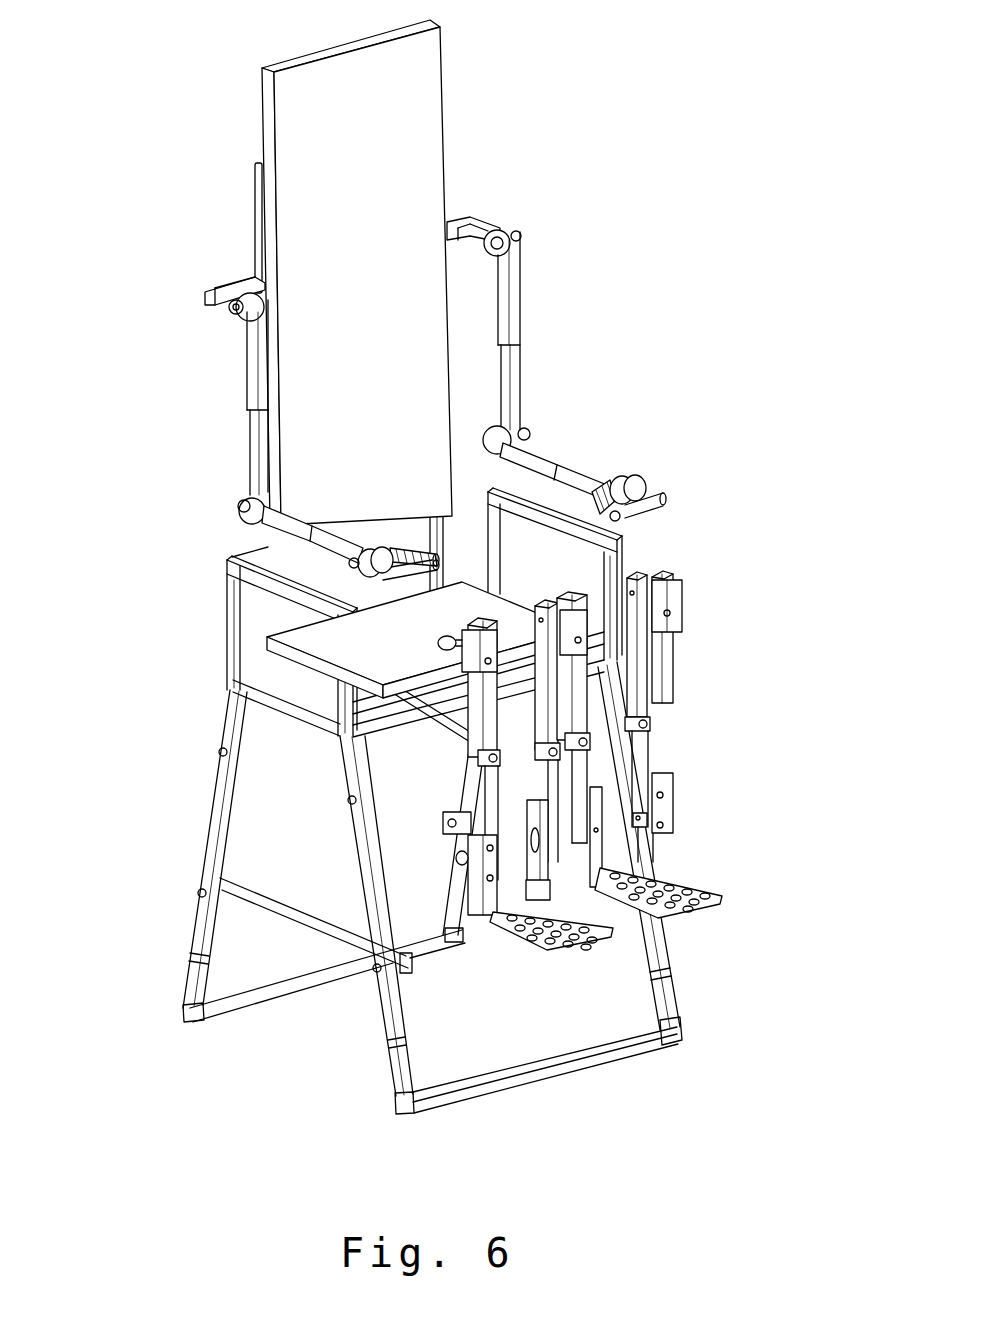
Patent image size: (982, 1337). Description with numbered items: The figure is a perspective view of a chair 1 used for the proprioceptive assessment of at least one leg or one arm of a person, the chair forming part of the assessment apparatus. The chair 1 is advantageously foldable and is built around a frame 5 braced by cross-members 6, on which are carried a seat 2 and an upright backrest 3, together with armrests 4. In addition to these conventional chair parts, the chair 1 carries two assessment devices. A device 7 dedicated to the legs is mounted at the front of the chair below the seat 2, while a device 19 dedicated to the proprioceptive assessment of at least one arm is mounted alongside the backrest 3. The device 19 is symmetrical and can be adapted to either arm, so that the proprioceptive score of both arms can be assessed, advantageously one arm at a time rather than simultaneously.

The chair 1 is at (440, 567).
The seat 2 is at (413, 649).
The backrest 3 is at (367, 214).
The armrests 4 is at (268, 585).
The frame 5 is at (207, 816).
The cross-members 6 is at (238, 898).
The device dedicated to the legs 7 is at (664, 754).
The device dedicated to the proprioceptive assessment of at least one arm 19 is at (527, 333).